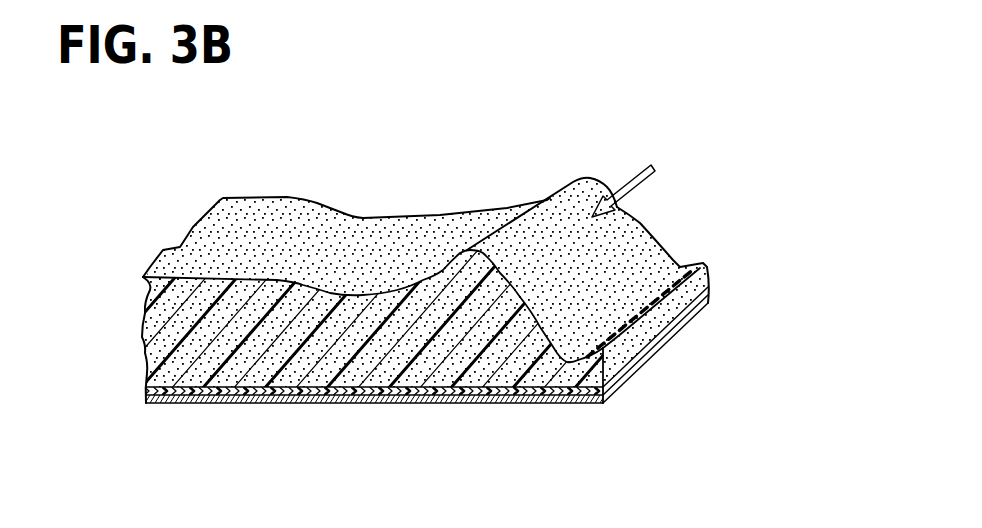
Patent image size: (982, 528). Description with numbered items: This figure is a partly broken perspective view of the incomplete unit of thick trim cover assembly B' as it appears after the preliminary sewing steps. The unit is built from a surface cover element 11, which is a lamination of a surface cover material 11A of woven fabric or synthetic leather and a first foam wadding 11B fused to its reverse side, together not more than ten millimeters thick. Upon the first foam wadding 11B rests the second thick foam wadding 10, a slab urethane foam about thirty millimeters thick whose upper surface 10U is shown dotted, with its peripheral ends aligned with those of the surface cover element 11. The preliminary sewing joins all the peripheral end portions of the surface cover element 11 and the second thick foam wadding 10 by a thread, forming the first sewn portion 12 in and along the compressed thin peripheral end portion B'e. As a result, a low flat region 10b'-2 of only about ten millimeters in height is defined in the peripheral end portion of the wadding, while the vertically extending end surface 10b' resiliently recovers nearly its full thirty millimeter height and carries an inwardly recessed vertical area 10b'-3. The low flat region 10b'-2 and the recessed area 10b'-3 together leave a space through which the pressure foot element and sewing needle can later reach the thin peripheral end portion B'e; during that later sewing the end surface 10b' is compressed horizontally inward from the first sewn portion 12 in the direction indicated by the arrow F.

The second thick foam wadding 10 is at (395, 324).
The upper surface of second thick foam wadding 10U is at (352, 243).
The vertically extending end surface 10b' is at (588, 243).
The low flat region 10b'-2 is at (700, 258).
The inwardly recessed vertical area 10b'-3 is at (514, 434).
The surface cover element 11 is at (453, 405).
The surface cover material 11A is at (257, 403).
The first foam wadding 11B is at (252, 468).
The first sewn portion 12 is at (683, 298).
The incomplete unit of thick trim cover assembly B' is at (152, 214).
The compressed thin peripheral end portion B'e is at (763, 268).
The arrow indicating direction of compression F is at (632, 178).